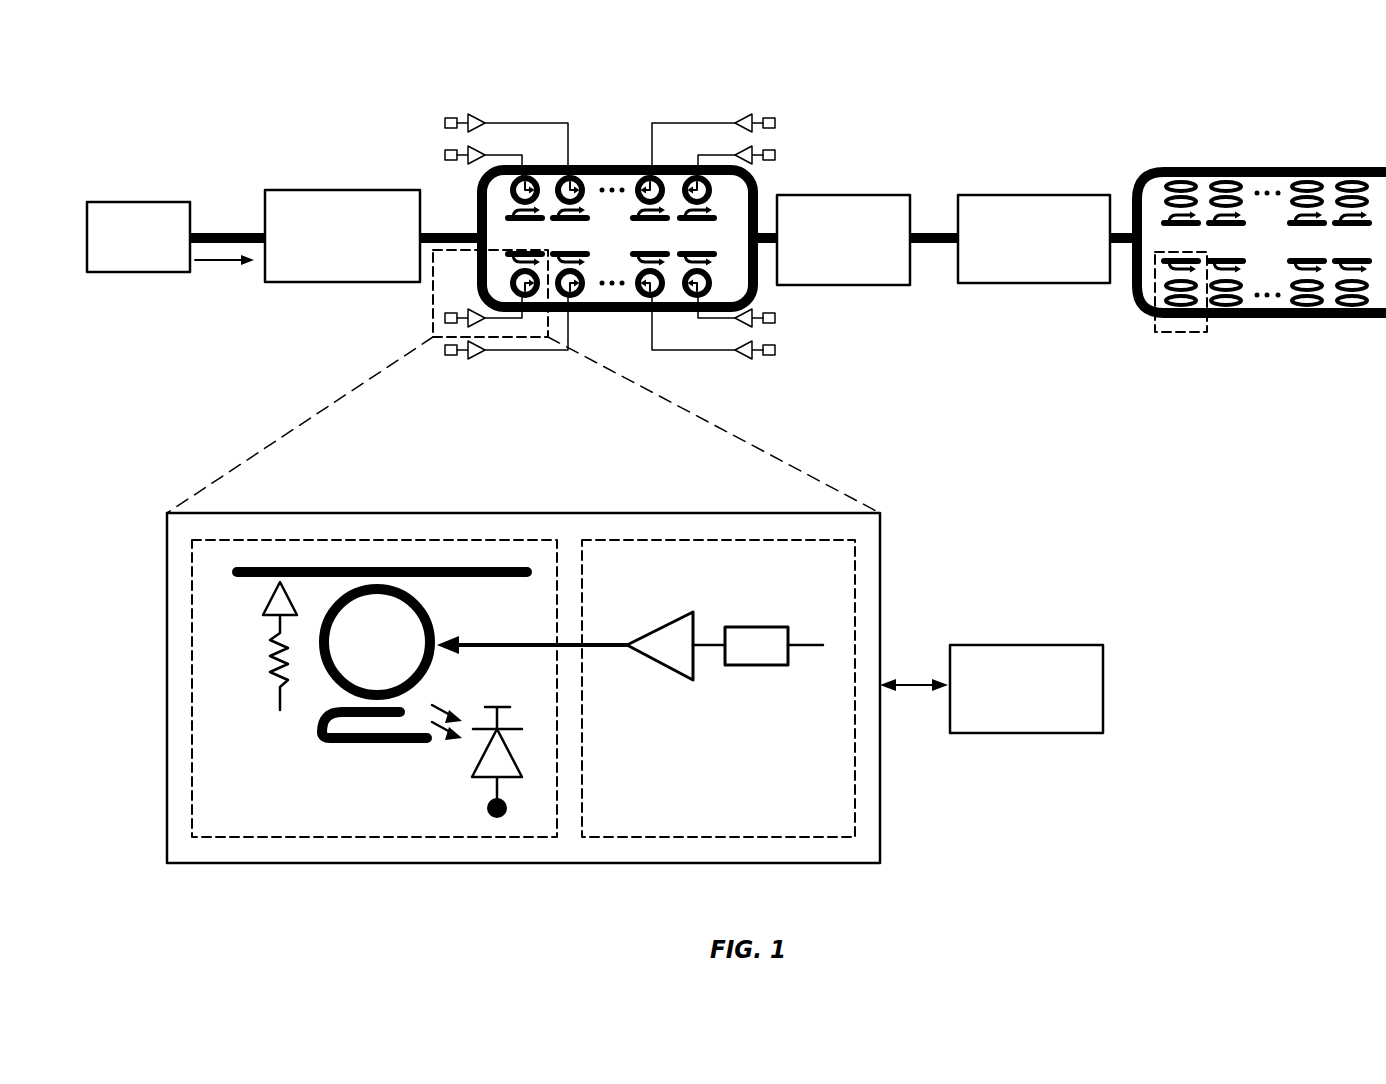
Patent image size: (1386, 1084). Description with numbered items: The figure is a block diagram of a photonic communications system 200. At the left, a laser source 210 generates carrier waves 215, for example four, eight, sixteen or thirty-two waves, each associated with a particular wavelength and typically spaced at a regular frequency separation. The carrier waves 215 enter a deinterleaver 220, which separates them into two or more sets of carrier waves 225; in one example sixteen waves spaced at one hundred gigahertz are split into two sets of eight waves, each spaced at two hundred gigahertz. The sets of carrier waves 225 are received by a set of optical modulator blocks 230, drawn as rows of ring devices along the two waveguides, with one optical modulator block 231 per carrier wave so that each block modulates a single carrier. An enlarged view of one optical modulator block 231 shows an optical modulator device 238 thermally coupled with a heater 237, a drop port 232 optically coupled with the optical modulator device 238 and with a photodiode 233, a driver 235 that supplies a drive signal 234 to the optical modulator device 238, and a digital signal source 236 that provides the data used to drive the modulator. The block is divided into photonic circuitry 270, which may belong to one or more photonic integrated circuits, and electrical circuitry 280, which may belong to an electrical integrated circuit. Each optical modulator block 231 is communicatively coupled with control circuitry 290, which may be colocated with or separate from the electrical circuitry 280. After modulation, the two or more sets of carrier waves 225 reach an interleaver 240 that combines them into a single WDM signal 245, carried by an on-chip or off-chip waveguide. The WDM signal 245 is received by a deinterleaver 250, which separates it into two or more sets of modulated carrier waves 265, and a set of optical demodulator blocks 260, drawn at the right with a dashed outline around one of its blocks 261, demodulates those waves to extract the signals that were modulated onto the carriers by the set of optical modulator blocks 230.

The photonic communications system 200 is at (1127, 906).
The laser source 210 is at (128, 202).
The carrier waves 215 is at (222, 232).
The deinterleaver 220 is at (343, 190).
The sets of carrier waves 225 is at (495, 368).
The set of optical modulator blocks 230 is at (506, 326).
The optical modulator block 231 is at (433, 310).
The drop port 232 is at (340, 743).
The photodiode 233 is at (473, 780).
The drive signal 234 is at (612, 648).
The driver 235 is at (667, 668).
The digital signal source 236 is at (755, 667).
The heater 237 is at (270, 670).
The optical modulator device 238 is at (437, 635).
The interleaver 240 is at (843, 195).
The WDM signal 245 is at (942, 233).
The deinterleaver 250 is at (1053, 195).
The set of optical demodulator blocks 260 is at (1257, 227).
The filter unit 261 is at (1183, 335).
The sets of modulated carrier waves 265 is at (1249, 167).
The photonic circuitry 270 is at (223, 840).
The electrical circuitry 280 is at (612, 840).
The control circuitry 290 is at (1027, 735).